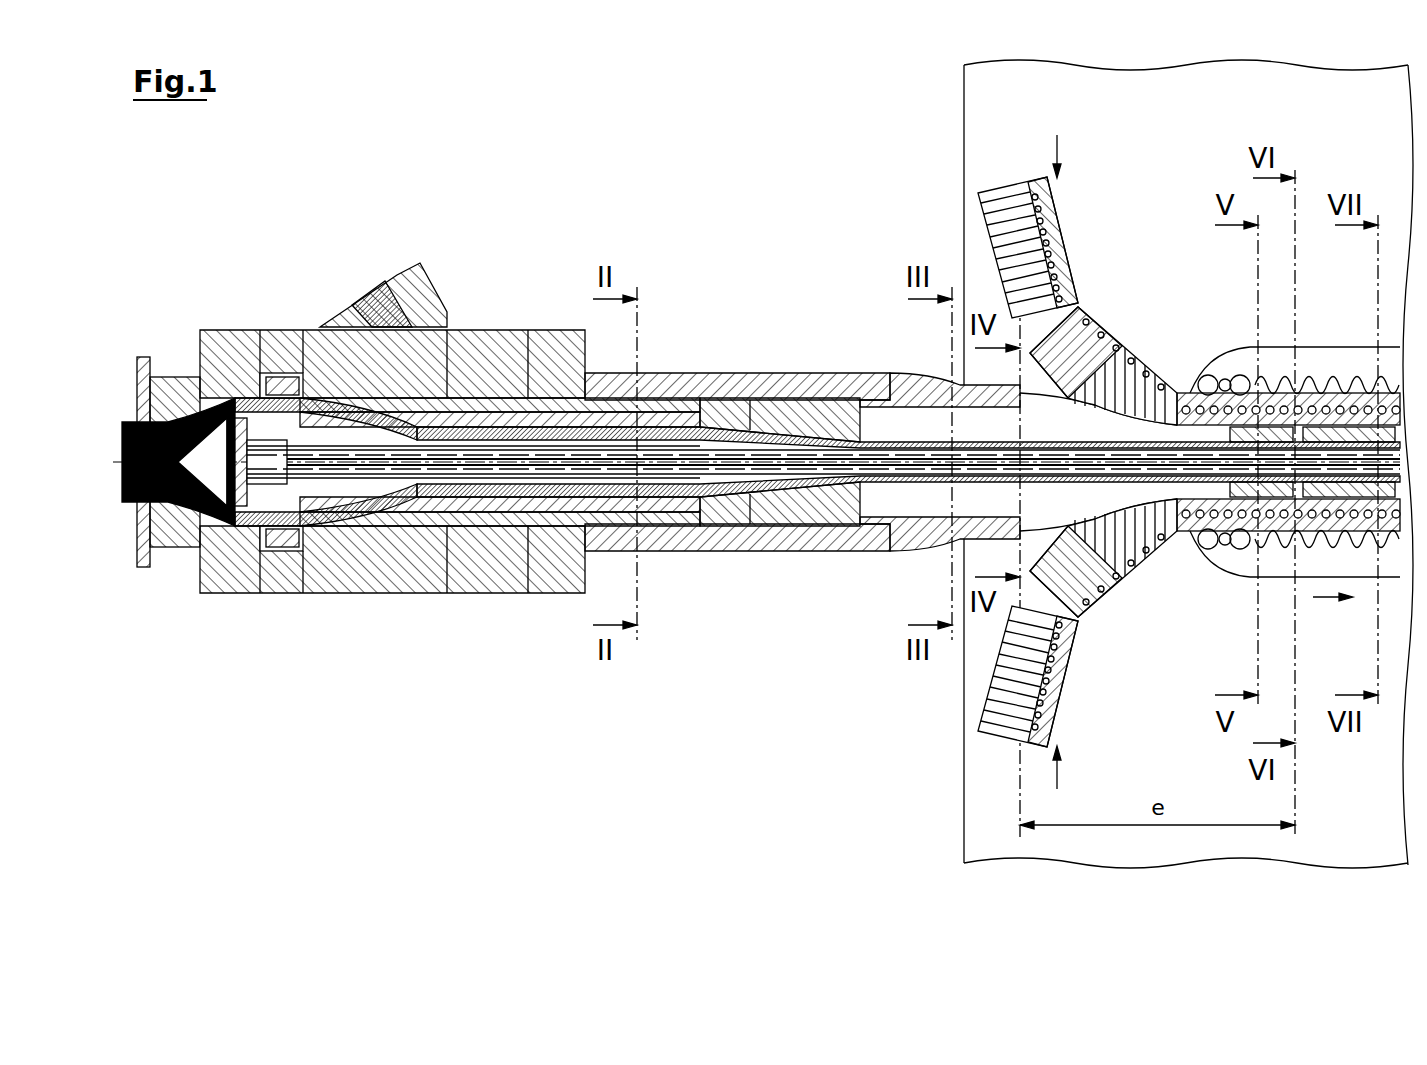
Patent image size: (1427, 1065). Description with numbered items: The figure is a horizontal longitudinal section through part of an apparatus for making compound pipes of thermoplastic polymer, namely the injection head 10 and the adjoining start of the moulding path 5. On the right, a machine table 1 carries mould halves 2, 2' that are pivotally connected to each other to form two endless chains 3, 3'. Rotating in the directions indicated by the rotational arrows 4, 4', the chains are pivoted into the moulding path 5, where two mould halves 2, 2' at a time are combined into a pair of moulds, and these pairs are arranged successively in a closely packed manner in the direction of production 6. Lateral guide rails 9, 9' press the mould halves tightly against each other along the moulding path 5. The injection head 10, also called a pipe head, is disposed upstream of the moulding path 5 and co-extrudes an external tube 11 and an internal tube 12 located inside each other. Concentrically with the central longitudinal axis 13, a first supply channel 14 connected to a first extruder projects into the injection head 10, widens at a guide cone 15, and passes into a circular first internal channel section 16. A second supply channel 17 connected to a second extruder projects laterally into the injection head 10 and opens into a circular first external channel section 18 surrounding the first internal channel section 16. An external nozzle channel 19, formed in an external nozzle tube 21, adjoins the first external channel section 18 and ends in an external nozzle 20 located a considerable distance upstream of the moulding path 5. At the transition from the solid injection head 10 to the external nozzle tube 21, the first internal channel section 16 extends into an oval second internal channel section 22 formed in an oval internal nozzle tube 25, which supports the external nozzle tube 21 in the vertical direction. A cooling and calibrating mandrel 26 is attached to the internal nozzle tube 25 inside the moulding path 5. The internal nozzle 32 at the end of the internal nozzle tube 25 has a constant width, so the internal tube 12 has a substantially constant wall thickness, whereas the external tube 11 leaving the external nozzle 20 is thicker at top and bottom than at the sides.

The machine table 1 is at (1150, 110).
The mould half 2 is at (1045, 247).
The mould half 2' is at (1048, 676).
The chain 3 is at (1103, 360).
The chain 3' is at (1103, 564).
The rotational arrow 4 is at (1039, 150).
The rotational arrow 4' is at (1043, 768).
The moulding path 5 is at (1345, 380).
The direction of production 6 is at (1330, 597).
The lateral guide rail 9 is at (1295, 334).
The lateral guide rail 9' is at (1295, 590).
The injection head 10 is at (718, 342).
The external tube 11 is at (1047, 400).
The internal tube 12 is at (1370, 393).
The central longitudinal axis 13 is at (117, 462).
The first supply channel 14 is at (117, 462).
The guide cone 15 is at (218, 395).
The first internal channel section 16 is at (510, 383).
The second supply channel 17 is at (362, 310).
The first external channel section 18 is at (550, 533).
The external nozzle channel 19 is at (918, 397).
The external nozzle 20 is at (1030, 530).
The external nozzle tube 21 is at (920, 543).
The second internal channel section 22 is at (860, 373).
The internal nozzle tube 25 is at (860, 540).
The cooling and calibrating mandrel 26 is at (1377, 542).
The internal nozzle 32 is at (1300, 417).